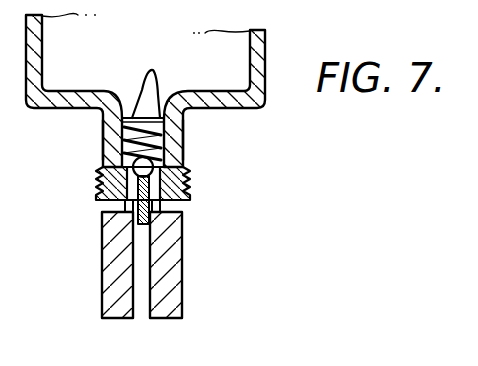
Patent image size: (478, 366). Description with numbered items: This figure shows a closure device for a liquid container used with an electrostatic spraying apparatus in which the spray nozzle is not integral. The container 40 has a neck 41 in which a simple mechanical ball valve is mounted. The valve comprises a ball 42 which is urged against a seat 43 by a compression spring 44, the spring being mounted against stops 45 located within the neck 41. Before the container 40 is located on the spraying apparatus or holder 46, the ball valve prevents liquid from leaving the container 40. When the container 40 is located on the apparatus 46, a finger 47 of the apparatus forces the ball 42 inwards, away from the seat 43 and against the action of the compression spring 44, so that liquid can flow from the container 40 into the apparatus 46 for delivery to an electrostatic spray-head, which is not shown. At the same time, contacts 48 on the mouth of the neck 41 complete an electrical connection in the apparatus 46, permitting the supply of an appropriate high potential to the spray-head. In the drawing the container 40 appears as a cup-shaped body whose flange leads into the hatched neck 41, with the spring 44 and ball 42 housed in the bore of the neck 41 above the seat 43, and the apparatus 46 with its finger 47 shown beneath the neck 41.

The container 40 is at (265, 73).
The neck 41 is at (183, 130).
The ball 42 is at (153, 170).
The seat 43 is at (177, 194).
The compression spring 44 is at (117, 134).
The stops 45 is at (148, 73).
The spraying apparatus 46 is at (177, 282).
The finger 47 is at (100, 200).
The contacts 48 is at (110, 226).